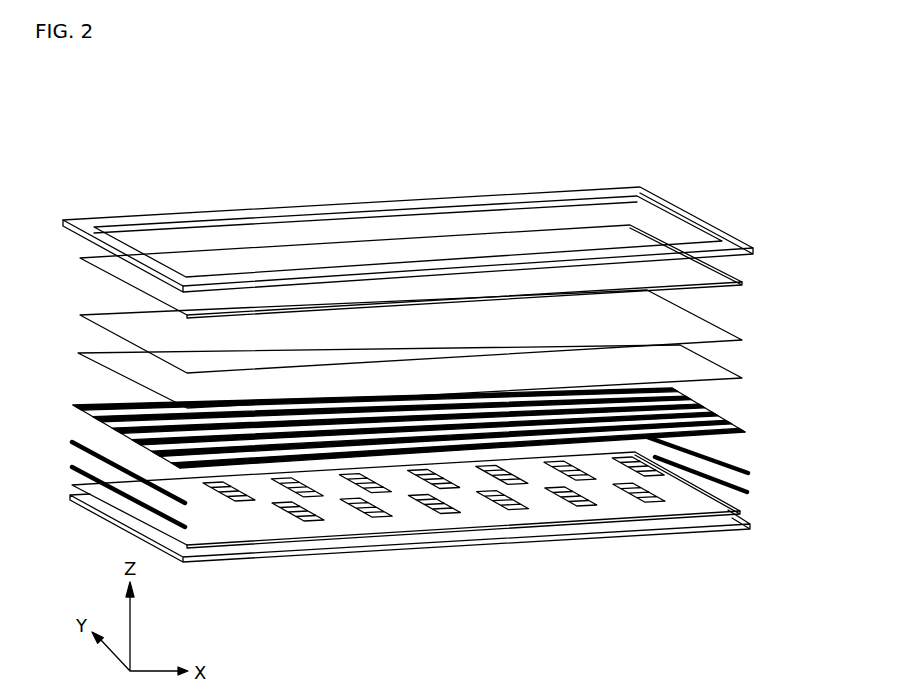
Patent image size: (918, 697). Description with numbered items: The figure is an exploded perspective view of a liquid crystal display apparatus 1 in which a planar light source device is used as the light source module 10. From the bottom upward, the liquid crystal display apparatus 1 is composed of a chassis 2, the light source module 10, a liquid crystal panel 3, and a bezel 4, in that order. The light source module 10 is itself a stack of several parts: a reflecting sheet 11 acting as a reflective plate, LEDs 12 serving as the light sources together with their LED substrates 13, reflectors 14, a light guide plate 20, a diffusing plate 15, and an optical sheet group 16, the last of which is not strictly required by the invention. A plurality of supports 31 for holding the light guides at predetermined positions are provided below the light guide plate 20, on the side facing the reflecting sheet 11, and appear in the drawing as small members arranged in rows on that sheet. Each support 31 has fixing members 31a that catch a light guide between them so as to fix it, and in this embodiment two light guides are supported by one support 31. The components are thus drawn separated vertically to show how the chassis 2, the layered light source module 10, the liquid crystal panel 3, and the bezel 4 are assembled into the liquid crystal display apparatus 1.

The liquid crystal display apparatus 1 is at (737, 166).
The chassis 2 is at (750, 527).
The liquid crystal panel 3 is at (742, 283).
The bezel 4 is at (753, 248).
The light source module 10 is at (818, 322).
The reflecting sheet 11 is at (437, 544).
The LEDs 12 is at (452, 492).
The LED substrates 13 is at (747, 492).
The reflectors 14 is at (748, 473).
The diffusing plate 15 is at (742, 378).
The optical sheet group 16 is at (742, 340).
The light guide plate 20 is at (745, 432).
The support 31 is at (434, 546).
The fixing members 31a is at (312, 513).